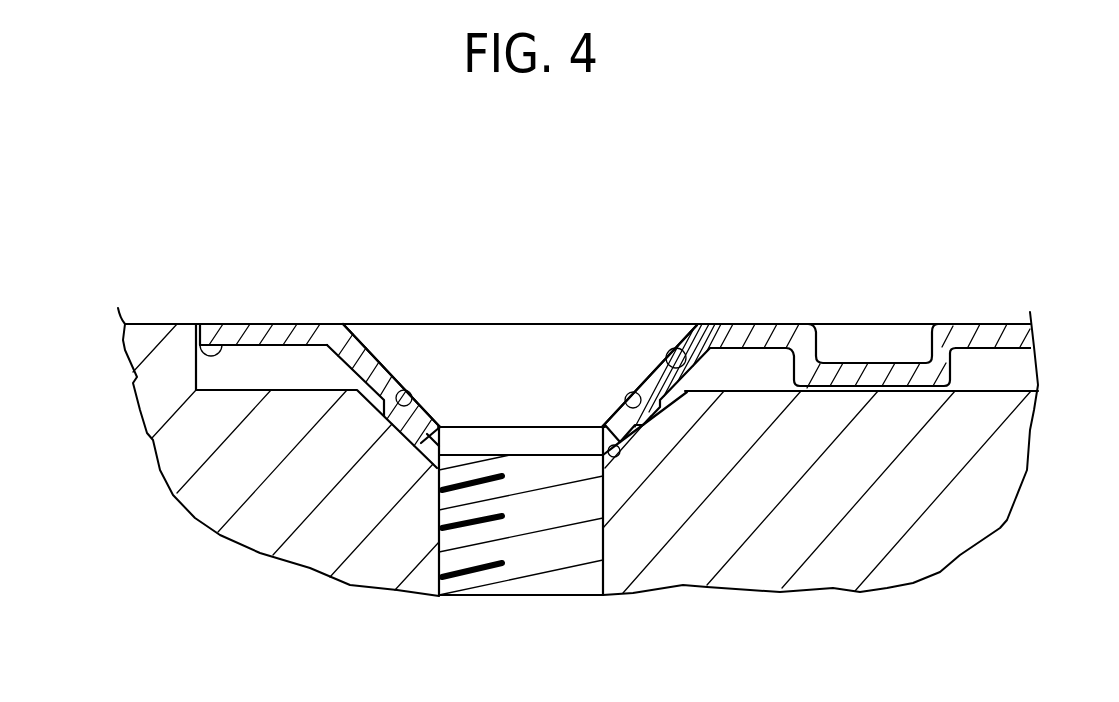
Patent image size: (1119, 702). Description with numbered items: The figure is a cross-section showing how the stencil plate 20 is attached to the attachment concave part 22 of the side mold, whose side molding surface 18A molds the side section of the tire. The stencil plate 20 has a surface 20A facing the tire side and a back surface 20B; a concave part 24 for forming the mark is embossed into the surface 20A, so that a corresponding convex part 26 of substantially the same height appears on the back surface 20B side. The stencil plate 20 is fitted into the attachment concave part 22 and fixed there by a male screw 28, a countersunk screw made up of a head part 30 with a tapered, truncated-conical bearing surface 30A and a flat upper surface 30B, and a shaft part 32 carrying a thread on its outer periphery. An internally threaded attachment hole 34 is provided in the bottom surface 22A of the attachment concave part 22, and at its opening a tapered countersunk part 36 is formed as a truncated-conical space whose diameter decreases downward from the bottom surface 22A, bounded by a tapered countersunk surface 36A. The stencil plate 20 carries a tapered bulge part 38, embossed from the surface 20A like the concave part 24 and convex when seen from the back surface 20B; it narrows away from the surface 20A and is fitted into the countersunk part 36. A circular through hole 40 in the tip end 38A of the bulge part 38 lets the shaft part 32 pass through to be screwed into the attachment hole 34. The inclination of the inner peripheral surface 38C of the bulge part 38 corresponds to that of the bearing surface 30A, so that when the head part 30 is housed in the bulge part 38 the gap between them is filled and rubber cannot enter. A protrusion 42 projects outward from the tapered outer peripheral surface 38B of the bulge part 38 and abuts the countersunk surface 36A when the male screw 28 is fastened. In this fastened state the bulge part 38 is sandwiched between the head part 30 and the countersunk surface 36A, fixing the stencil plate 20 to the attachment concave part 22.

The side molding surface 18A is at (147, 324).
The stencil plate 20 is at (953, 302).
The surface of the stencil plate 20A is at (985, 324).
The back surface of the stencil plate 20B is at (986, 348).
The attachment concave part 22 is at (215, 324).
The bottom surface of the attachment concave part 22A is at (257, 378).
The concave part 24 is at (877, 364).
The convex part 26 is at (887, 386).
The male screw 28 is at (596, 308).
The head part 30 is at (533, 340).
The bearing surface 30A is at (672, 362).
The upper surface of the head part 30B is at (480, 324).
The shaft part 32 is at (533, 565).
The attachment hole 34 is at (588, 563).
The countersunk part 36 is at (310, 567).
The countersunk surface 36A is at (612, 456).
The bulge part 38 is at (380, 324).
The tip end of the bulge part 38A is at (429, 436).
The tapered outer peripheral surface 38B is at (331, 324).
The inner peripheral surface of the bulge part 38C is at (410, 324).
The through hole 40 is at (584, 426).
The protrusion 42 is at (650, 420).